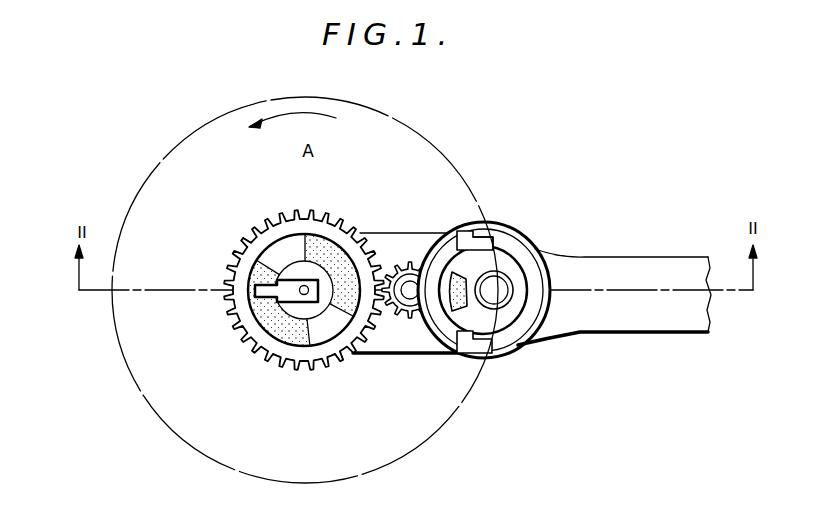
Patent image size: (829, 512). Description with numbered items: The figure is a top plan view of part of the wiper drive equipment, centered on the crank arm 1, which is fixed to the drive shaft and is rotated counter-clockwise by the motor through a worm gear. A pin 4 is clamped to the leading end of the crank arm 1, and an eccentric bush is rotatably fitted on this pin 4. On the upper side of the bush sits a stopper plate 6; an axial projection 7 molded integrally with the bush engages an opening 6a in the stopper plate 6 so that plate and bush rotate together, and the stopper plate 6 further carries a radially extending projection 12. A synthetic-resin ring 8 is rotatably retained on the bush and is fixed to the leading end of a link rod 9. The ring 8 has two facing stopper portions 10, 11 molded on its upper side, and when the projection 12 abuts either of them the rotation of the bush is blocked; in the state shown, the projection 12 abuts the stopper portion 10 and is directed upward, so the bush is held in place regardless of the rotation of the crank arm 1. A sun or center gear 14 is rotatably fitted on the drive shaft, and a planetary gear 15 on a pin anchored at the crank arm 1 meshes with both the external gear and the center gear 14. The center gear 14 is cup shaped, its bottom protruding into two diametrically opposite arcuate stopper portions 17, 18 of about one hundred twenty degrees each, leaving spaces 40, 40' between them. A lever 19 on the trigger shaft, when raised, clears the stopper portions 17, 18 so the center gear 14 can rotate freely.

The crank arm 1 is at (398, 343).
The pin 4 is at (600, 262).
The stopper plate 6 is at (512, 322).
The opening 6a is at (508, 320).
The axial projection 7 is at (467, 300).
The ring 8 is at (530, 265).
The link rod 9 is at (670, 318).
The stopper portion 10 is at (463, 237).
The stopper portion 11 is at (462, 348).
The radially extending projection 12 is at (485, 243).
The sun or center gear 14 is at (263, 358).
The planetary gear 15 is at (408, 252).
The stopper portion 17 is at (323, 245).
The stopper portion 18 is at (268, 325).
The lever 19 is at (266, 296).
The space 40 is at (375, 419).
The space 40' is at (252, 206).